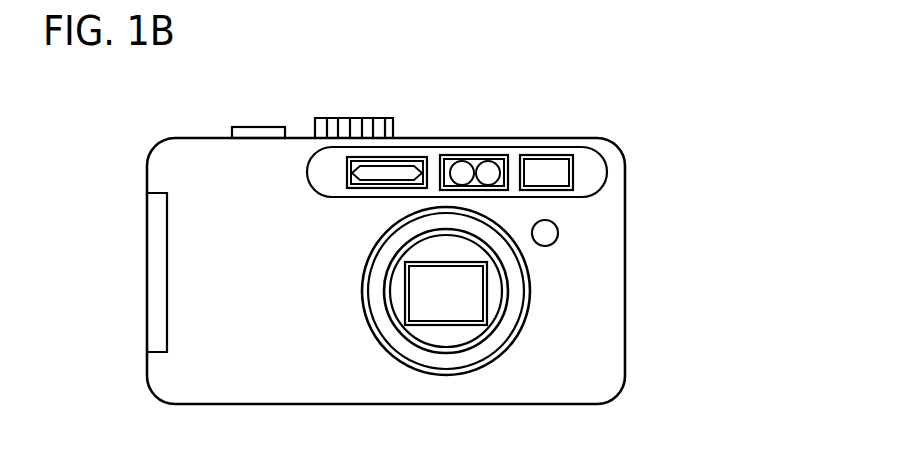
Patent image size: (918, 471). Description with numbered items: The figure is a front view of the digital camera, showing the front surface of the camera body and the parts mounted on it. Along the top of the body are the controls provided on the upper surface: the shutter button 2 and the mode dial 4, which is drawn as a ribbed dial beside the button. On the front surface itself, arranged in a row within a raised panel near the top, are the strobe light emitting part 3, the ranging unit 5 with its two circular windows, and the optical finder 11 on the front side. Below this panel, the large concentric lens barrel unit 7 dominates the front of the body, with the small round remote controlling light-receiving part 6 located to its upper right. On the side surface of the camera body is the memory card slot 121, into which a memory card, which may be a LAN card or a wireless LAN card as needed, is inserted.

The shutter button 2 is at (258, 132).
The mode dial 4 is at (378, 123).
The strobe light emitting part 3 is at (397, 168).
The ranging unit 5 is at (477, 183).
The optical finder 11 is at (563, 172).
The remote controlling light-receiving part 6 is at (553, 233).
The lens barrel unit 7 is at (468, 333).
The memory card slot 121 is at (155, 240).